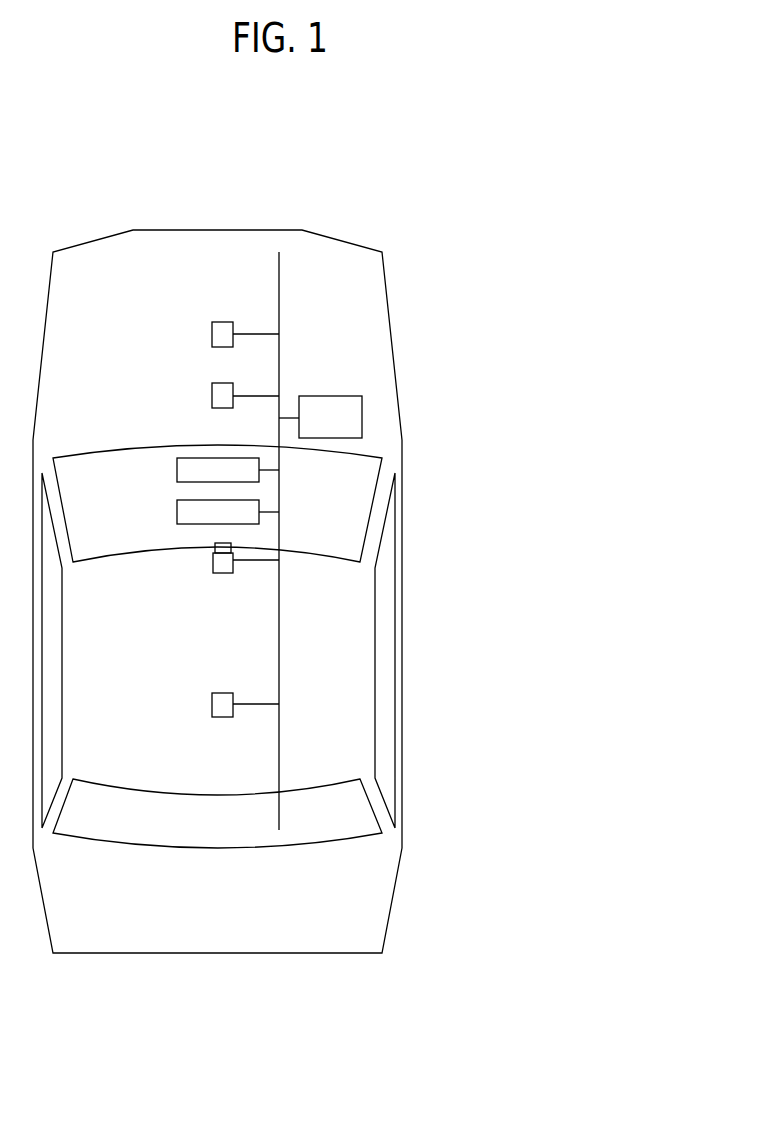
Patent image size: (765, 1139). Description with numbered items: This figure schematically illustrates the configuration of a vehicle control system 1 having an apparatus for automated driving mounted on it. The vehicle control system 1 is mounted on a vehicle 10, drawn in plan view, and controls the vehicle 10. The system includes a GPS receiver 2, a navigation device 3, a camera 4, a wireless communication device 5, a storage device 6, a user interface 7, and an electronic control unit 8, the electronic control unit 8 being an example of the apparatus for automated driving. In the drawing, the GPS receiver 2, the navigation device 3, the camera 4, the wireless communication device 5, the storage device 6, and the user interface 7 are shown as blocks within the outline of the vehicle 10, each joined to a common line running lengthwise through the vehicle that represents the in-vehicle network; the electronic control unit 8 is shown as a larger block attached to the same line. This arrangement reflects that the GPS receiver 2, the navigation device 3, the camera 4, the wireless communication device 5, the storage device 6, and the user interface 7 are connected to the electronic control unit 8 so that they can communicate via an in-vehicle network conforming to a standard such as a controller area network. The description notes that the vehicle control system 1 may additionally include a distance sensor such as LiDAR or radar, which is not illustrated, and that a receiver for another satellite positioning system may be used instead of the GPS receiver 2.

The vehicle control system 1 is at (587, 846).
The vehicle 10 is at (403, 833).
The GPS receiver 2 is at (212, 701).
The navigation device 3 is at (177, 510).
The camera 4 is at (213, 562).
The wireless communication device 5 is at (212, 328).
The storage device 6 is at (212, 391).
The user interface 7 is at (177, 469).
The electronic control unit 8 is at (362, 417).